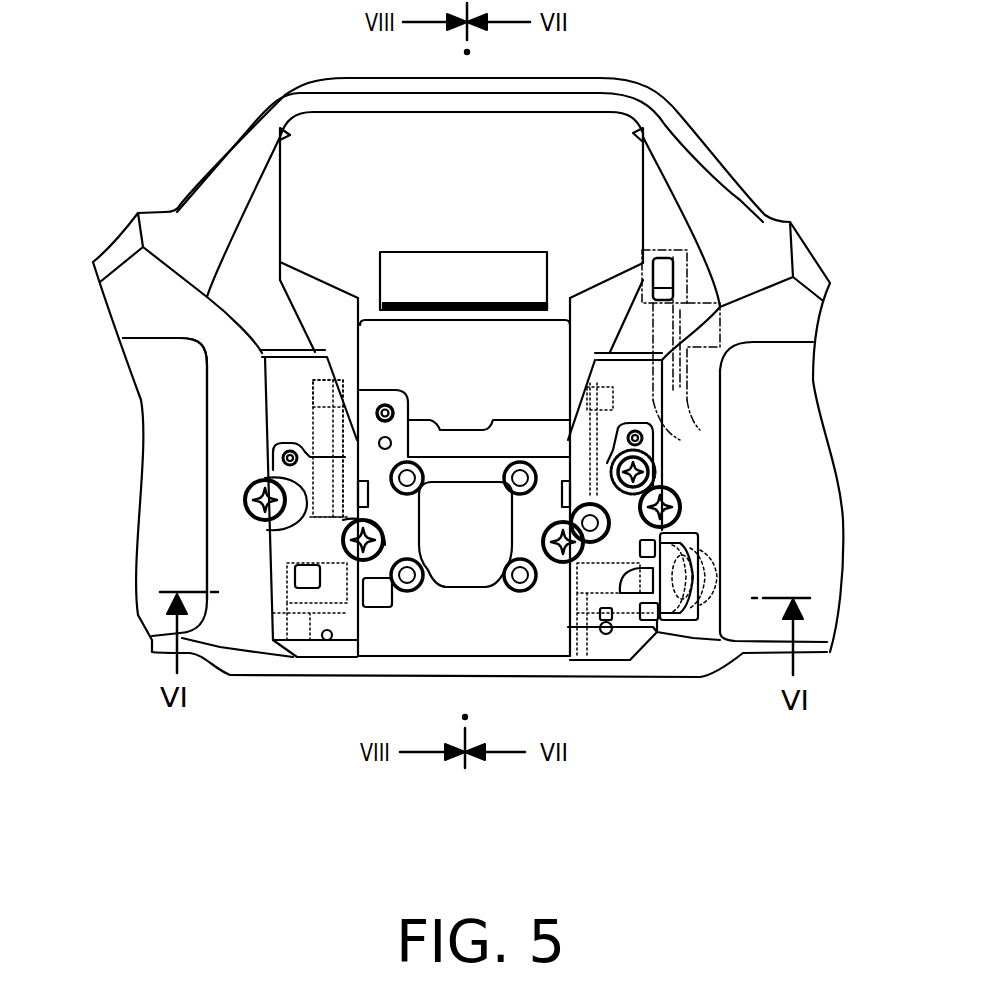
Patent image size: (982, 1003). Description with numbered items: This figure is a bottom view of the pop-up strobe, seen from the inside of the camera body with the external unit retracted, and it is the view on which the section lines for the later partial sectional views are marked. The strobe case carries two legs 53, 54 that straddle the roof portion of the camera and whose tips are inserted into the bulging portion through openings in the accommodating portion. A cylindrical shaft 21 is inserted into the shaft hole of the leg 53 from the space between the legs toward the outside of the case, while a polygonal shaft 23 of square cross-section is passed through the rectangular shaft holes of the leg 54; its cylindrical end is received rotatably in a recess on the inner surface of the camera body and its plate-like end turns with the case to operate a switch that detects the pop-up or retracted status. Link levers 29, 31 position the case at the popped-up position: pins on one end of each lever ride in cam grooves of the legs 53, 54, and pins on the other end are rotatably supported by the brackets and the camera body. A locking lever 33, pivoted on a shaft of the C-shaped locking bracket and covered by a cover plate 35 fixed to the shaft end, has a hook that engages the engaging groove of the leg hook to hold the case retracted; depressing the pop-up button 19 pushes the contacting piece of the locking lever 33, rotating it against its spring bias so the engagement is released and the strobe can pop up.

The pop-up button 19 is at (727, 563).
The cylindrical shaft 21 is at (623, 637).
The polygonal shaft 23 is at (310, 627).
The link lever 29 is at (573, 447).
The link lever 31 is at (330, 430).
The locking lever 33 is at (670, 415).
The cover plate 35 is at (667, 410).
The leg 53 is at (567, 642).
The leg 54 is at (265, 543).